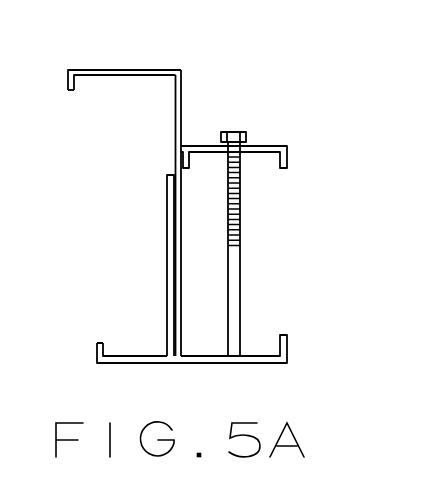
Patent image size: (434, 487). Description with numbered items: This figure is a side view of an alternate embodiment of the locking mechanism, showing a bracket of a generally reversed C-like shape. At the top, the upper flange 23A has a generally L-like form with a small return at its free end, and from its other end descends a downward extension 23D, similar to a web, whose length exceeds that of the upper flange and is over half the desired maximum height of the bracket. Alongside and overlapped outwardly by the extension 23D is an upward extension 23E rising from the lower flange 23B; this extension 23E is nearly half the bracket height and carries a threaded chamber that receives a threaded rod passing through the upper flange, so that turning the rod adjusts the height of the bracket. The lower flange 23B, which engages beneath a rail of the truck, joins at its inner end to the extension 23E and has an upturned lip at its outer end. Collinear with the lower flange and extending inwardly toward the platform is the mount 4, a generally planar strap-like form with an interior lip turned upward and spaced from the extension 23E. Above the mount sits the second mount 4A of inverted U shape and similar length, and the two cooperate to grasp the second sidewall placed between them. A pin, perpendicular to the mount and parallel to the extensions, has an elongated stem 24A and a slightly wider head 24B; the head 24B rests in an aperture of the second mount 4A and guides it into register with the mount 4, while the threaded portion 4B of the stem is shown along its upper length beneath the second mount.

The upper flange 23A is at (131, 69).
The extension 23D is at (182, 104).
The extension 23E is at (167, 307).
The lower flange 23B is at (147, 363).
The mount 4 is at (258, 363).
The second mount 4A is at (267, 146).
The threaded portion 4B is at (240, 203).
The stem 24A is at (235, 289).
The head 24B is at (232, 132).